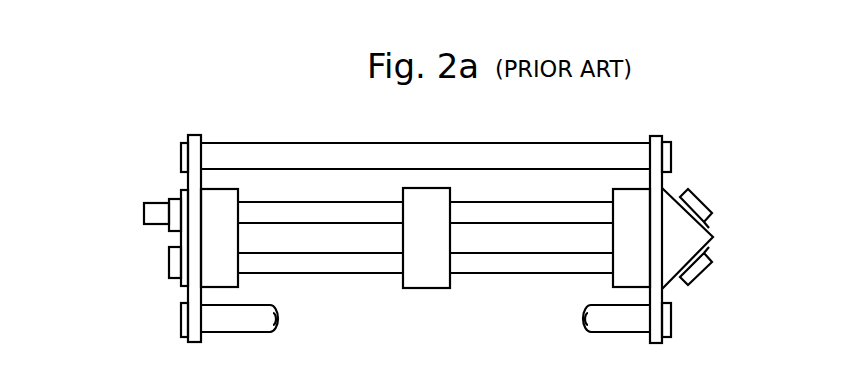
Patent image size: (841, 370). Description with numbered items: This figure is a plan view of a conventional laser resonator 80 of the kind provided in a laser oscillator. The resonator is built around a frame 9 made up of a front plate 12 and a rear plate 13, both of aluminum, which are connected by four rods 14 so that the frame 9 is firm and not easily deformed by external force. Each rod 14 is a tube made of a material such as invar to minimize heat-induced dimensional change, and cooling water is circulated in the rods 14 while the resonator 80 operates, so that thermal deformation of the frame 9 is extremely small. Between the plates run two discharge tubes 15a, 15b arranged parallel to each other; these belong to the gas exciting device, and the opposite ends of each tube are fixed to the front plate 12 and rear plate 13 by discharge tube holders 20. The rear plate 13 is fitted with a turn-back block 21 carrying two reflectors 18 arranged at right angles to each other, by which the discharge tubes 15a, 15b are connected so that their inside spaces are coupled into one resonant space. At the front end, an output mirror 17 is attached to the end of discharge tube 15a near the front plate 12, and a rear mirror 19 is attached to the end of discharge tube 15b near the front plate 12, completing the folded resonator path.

The frame 9 is at (680, 142).
The laser resonator 80 is at (723, 148).
The front plate 12 is at (194, 137).
The rear plate 13 is at (653, 137).
The rod 14 is at (343, 153).
The discharge tube 15a is at (353, 263).
The discharge tube 15b is at (289, 213).
The output mirror 17 is at (173, 265).
The reflector 18 is at (700, 204).
The rear mirror 19 is at (160, 207).
The discharge tube holder 20 is at (225, 197).
The turn-back block 21 is at (687, 239).